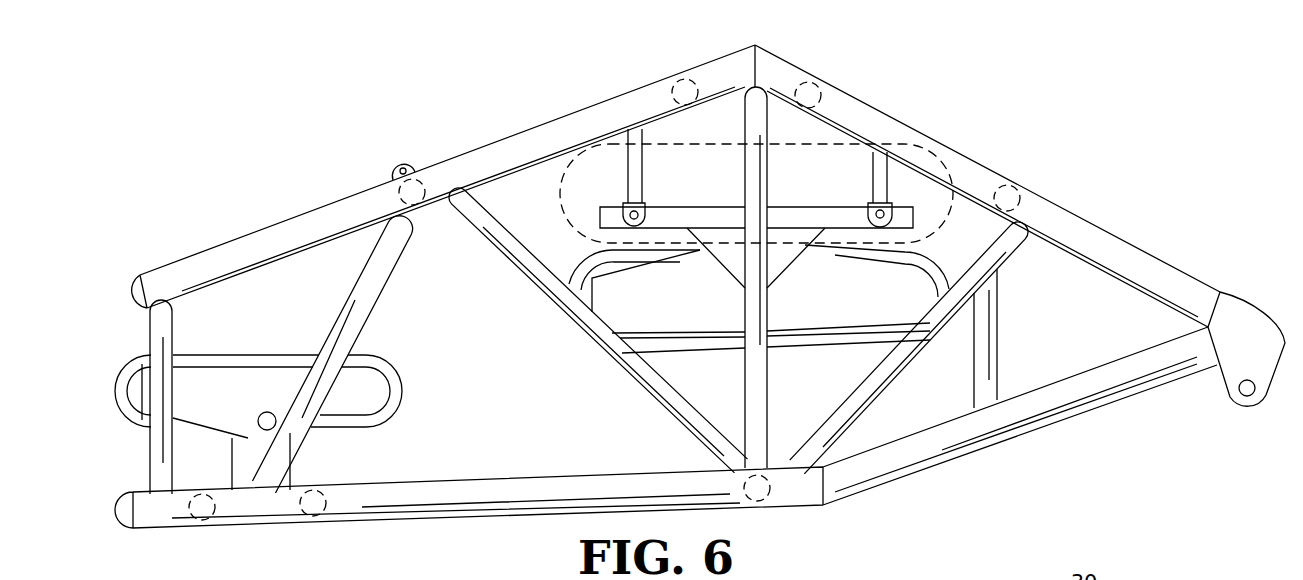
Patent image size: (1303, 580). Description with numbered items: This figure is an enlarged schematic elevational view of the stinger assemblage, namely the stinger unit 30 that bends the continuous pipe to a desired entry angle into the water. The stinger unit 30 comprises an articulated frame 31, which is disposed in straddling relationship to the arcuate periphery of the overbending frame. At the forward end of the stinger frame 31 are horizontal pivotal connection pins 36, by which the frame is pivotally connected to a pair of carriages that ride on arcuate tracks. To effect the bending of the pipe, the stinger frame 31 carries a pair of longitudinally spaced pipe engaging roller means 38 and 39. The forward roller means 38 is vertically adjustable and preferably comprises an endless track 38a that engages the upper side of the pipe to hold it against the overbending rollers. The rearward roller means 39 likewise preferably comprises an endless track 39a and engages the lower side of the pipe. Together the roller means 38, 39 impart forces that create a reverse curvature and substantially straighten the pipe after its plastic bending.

The stinger unit 30 is at (1070, 147).
The articulated frame 31 is at (1107, 233).
The horizontal pivotal connection pins 36 is at (1247, 396).
The forward pipe engaging roller means 38 is at (572, 253).
The endless track 38a is at (945, 260).
The rearward pipe engaging roller means 39 is at (267, 340).
The endless track 39a is at (388, 357).